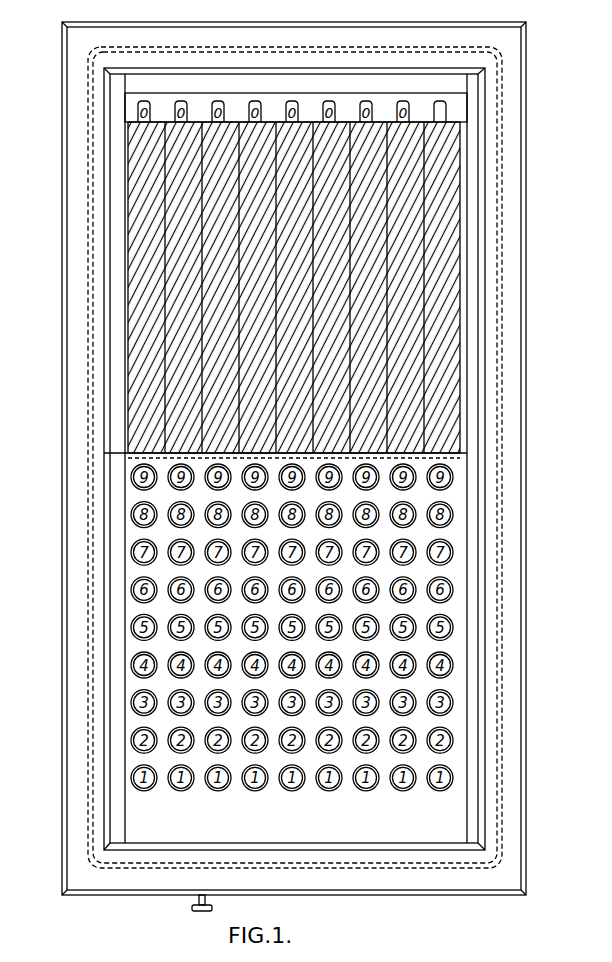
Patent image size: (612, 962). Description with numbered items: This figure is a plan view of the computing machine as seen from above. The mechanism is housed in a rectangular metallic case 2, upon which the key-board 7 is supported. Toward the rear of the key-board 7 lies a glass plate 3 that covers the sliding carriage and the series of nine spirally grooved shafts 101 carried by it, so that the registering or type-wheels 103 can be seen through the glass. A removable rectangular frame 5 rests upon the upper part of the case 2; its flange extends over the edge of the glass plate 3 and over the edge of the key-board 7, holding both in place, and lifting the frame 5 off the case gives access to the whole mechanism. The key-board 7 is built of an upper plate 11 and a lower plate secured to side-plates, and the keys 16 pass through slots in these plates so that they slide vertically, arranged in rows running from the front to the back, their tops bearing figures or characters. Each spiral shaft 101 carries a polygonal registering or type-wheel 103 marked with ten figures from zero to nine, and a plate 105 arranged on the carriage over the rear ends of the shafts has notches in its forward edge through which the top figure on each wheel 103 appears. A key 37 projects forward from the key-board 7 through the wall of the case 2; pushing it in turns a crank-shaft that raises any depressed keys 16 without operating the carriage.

The case 2 is at (518, 307).
The glass plate 3 is at (458, 373).
The removable rectangular frame 5 is at (72, 540).
The key-board 7 is at (465, 693).
The upper plate 11 is at (294, 638).
The keys 16 is at (447, 595).
The key 37 is at (193, 910).
The spirally grooved shafts 101 is at (145, 295).
The registering or type-wheel 103 is at (458, 114).
The plate 105 is at (270, 108).